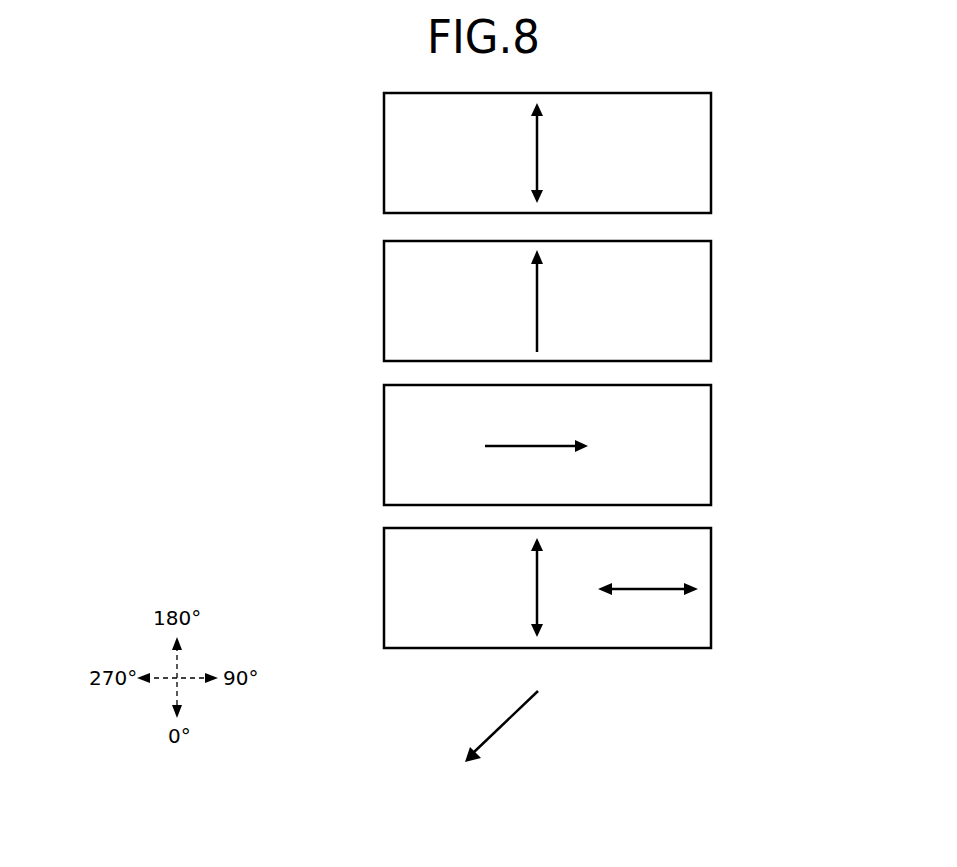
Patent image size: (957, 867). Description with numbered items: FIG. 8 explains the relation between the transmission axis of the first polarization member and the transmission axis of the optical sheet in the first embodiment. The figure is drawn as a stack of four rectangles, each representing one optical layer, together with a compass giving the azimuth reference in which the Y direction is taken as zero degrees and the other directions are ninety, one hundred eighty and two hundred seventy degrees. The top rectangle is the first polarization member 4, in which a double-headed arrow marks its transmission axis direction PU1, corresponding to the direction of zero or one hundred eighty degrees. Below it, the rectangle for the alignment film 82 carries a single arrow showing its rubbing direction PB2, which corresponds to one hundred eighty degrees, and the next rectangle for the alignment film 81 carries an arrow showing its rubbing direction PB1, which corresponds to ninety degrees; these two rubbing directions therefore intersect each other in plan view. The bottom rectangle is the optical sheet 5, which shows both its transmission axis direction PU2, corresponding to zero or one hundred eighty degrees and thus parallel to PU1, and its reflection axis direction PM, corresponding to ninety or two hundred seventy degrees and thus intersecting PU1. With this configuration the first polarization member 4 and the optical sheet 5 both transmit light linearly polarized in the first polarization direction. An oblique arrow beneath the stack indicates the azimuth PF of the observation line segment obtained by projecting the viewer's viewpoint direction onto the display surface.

The first polarization member 4 is at (711, 152).
The alignment film 82 is at (711, 302).
The alignment film 81 is at (711, 440).
The optical sheet 5 is at (711, 588).
The transmission axis direction of the first polarization member PU1 is at (536, 155).
The rubbing direction of the alignment film 82 PB2 is at (536, 303).
The rubbing direction of the alignment film 81 PB1 is at (536, 446).
The transmission axis direction of the optical sheet PU2 is at (536, 585).
The reflection axis direction of the optical sheet PM is at (657, 590).
The azimuth of the observation line segment PF is at (500, 730).